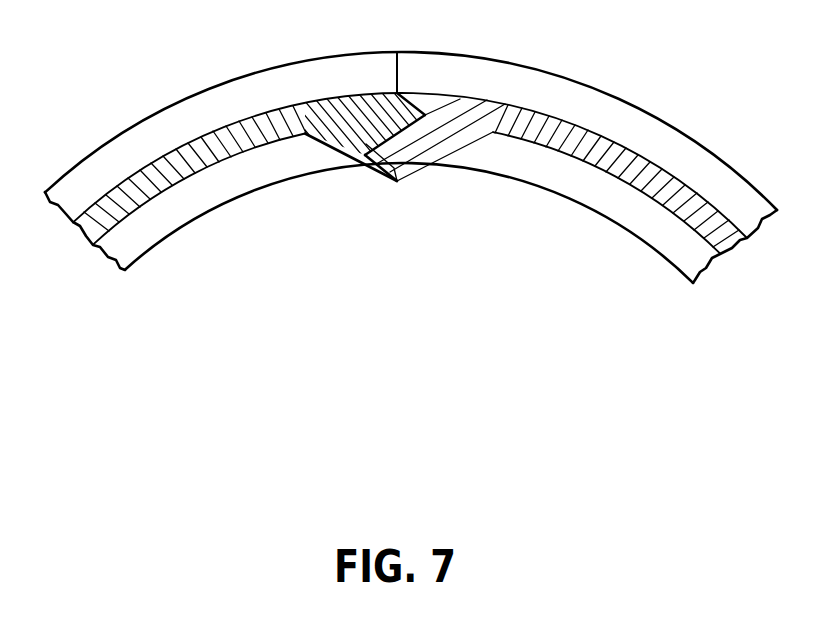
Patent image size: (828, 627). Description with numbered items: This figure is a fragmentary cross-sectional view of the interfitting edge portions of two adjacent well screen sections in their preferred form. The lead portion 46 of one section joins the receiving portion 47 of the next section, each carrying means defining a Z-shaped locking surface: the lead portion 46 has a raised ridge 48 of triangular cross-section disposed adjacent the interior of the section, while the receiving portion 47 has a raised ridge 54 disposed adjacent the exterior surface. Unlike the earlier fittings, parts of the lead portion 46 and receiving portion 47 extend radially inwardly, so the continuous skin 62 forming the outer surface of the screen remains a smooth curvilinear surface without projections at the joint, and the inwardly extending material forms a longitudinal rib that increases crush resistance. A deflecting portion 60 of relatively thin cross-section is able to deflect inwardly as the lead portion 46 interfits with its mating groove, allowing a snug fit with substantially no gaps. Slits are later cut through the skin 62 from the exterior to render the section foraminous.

The lead portion 46 is at (433, 173).
The receiving portion 47 is at (368, 182).
The raised ridge 48 is at (385, 157).
The raised ridge 54 is at (410, 116).
The deflecting portion 60 is at (380, 181).
The skin 62 is at (610, 160).